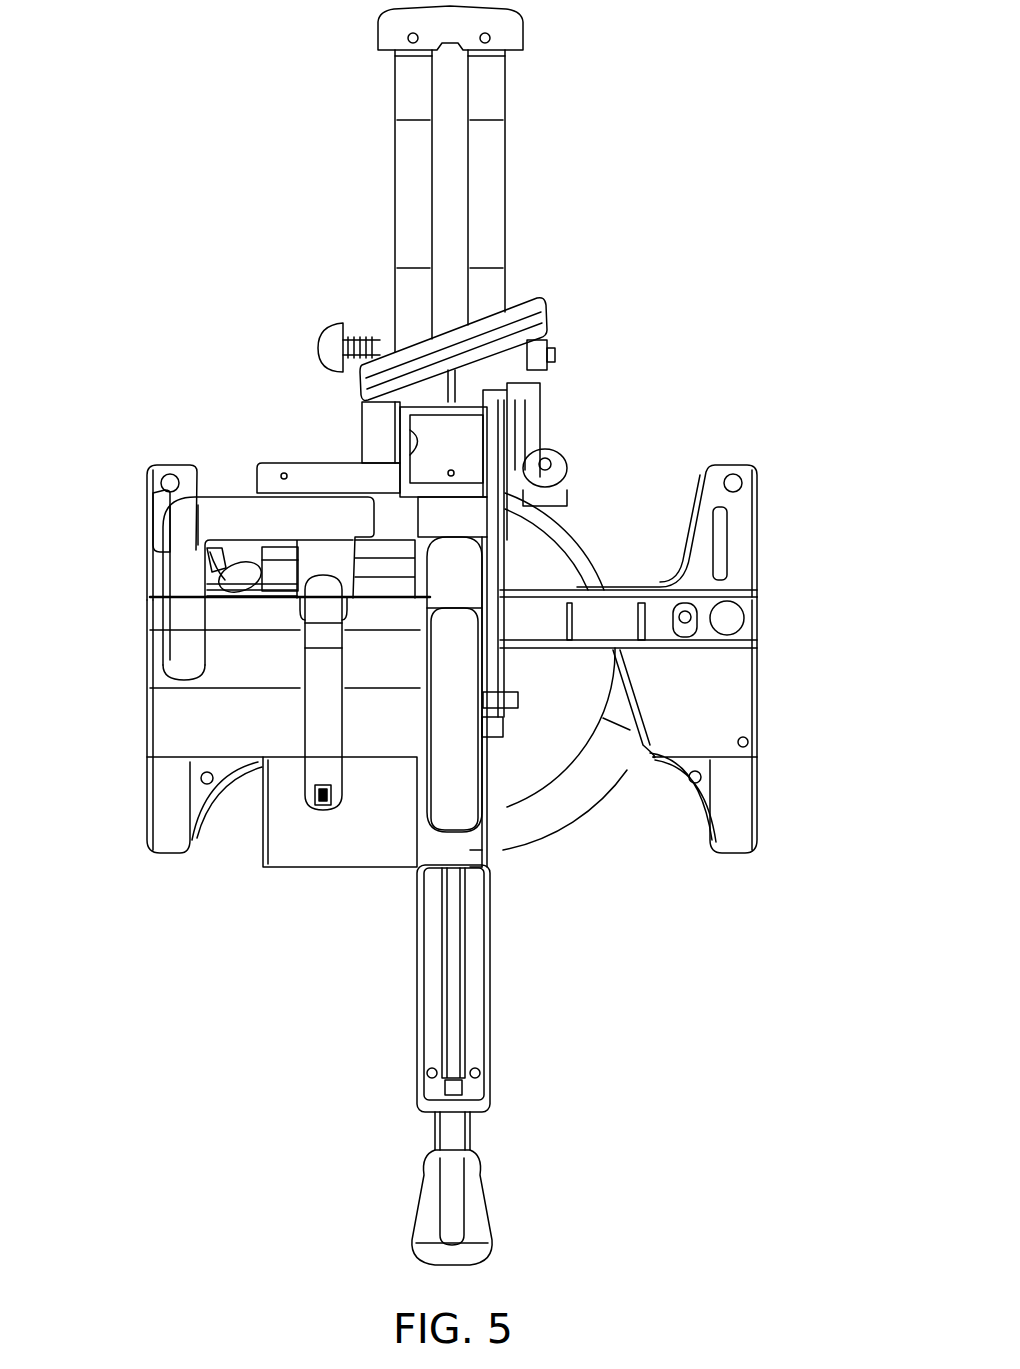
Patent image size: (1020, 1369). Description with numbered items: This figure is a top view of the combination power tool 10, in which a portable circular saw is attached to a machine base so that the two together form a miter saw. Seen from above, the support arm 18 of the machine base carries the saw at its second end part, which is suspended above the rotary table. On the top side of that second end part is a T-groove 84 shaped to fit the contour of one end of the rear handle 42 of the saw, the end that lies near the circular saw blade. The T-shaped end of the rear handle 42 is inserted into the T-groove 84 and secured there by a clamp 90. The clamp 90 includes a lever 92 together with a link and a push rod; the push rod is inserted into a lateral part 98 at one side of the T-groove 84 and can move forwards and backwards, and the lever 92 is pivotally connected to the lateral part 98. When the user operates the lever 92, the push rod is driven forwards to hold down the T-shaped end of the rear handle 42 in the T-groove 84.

The combination power tool 10 is at (480, 635).
The support arm 18 is at (597, 368).
The rear handle 42 is at (206, 503).
The T-groove 84 is at (318, 490).
The clamp 90 is at (226, 556).
The lever 92 is at (238, 578).
The lateral part 98 is at (285, 557).